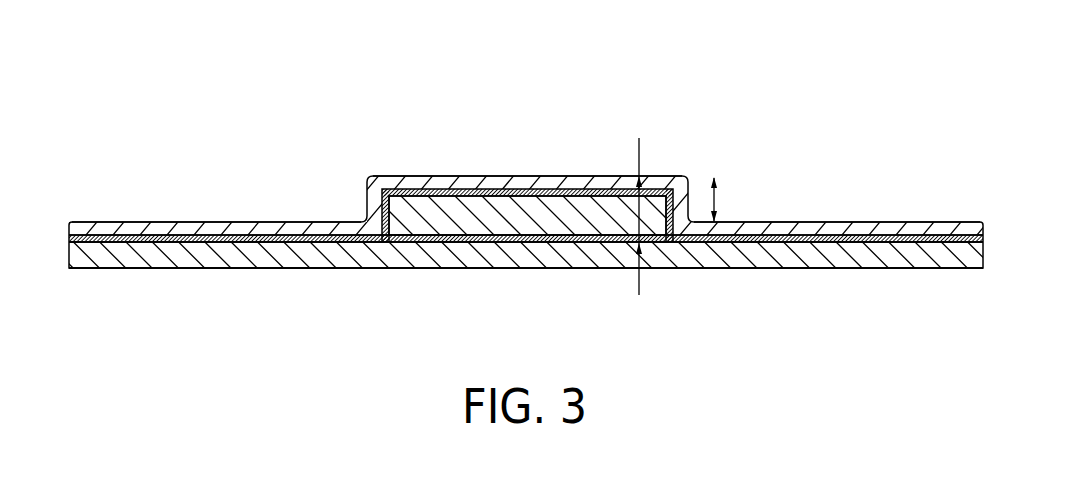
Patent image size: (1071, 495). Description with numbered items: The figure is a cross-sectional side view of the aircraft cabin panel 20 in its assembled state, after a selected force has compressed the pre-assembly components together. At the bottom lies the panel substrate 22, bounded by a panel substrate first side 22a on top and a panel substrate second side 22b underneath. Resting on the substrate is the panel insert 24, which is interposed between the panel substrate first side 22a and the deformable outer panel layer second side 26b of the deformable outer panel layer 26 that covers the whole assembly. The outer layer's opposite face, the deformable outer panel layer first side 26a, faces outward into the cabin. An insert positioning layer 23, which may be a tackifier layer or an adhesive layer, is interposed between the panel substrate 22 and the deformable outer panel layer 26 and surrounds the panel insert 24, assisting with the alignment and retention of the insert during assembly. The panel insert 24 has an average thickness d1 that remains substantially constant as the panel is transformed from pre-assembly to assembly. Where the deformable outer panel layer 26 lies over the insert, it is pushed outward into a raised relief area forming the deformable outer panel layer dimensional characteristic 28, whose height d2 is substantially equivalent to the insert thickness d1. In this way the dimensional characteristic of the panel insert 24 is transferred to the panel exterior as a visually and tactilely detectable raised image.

The aircraft cabin panel 20 is at (800, 77).
The panel substrate 22 is at (167, 255).
The panel substrate first side 22a is at (318, 228).
The panel substrate second side 22b is at (875, 268).
The insert positioning layer 23 is at (505, 192).
The panel insert 24 is at (428, 212).
The deformable outer panel layer 26 is at (165, 228).
The deformable outer panel layer first side 26a is at (267, 225).
The deformable outer panel layer second side 26b is at (790, 250).
The deformable outer panel layer dimensional characteristic 28 is at (583, 176).
The panel insert average thickness d1 is at (637, 202).
The raised relief area height d2 is at (716, 198).